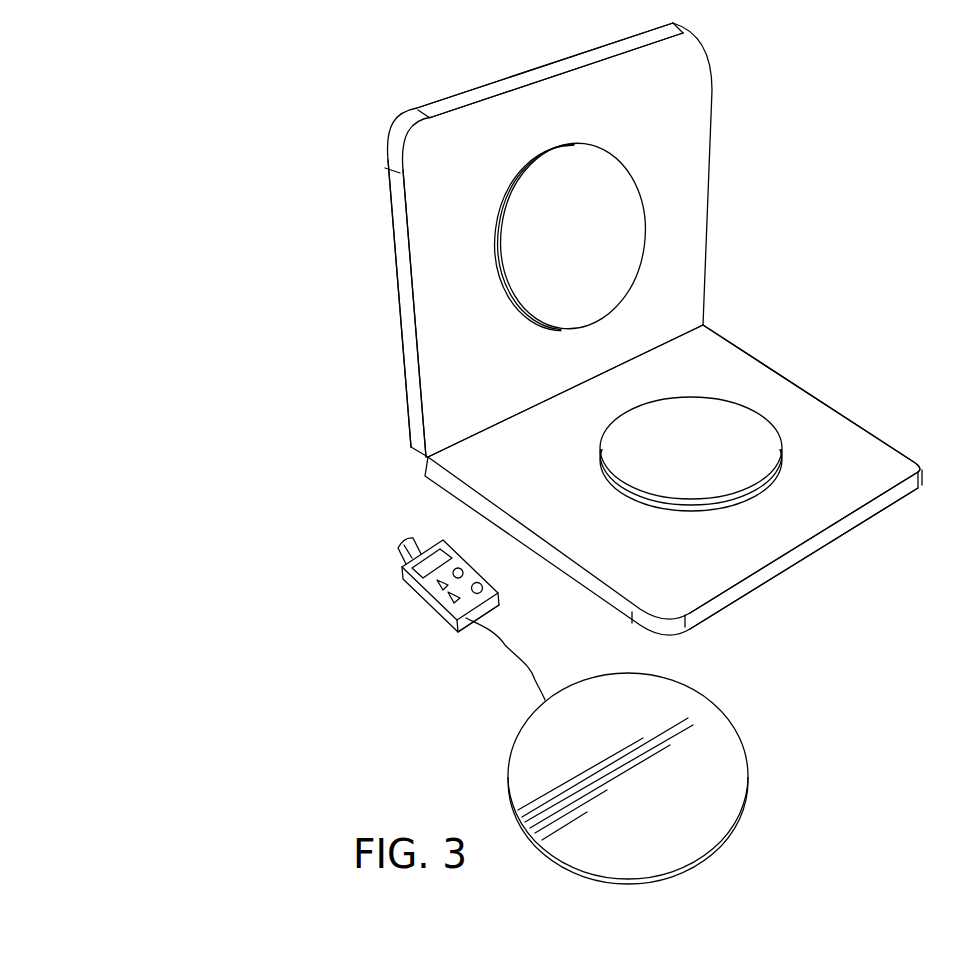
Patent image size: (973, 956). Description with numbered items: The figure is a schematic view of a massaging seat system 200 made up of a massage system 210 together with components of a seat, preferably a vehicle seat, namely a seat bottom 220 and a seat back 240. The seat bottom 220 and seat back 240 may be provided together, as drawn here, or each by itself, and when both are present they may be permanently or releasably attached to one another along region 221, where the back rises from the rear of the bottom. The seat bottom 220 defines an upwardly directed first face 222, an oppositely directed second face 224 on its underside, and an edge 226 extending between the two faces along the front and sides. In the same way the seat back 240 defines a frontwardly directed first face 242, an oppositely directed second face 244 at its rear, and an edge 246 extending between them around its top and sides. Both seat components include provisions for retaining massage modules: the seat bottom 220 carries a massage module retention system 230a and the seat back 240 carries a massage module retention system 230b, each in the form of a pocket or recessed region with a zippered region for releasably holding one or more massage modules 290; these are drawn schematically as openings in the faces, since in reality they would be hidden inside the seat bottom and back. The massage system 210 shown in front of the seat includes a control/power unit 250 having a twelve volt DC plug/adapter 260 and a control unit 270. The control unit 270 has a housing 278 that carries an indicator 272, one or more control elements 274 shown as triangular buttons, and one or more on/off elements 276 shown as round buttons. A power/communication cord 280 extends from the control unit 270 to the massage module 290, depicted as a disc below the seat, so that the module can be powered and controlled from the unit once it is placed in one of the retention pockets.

The massaging seat system 200 is at (178, 146).
The massage system 210 is at (360, 762).
The seat bottom 220 is at (870, 440).
The region 221 is at (473, 435).
The first face 222 is at (892, 465).
The second face 224 is at (870, 482).
The edge 226 is at (788, 560).
The massage module retention system 230a is at (762, 408).
The massage module retention system 230b is at (645, 247).
The seat back 240 is at (427, 245).
The first face 242 is at (427, 188).
The second face 244 is at (430, 155).
The edge 246 is at (525, 72).
The control/power unit 250 is at (323, 535).
The 12 VDC plug/adapter 260 is at (398, 552).
The control unit 270 is at (417, 590).
The indicator 272 is at (447, 540).
The control elements 274 is at (442, 608).
The on/off elements 276 is at (463, 567).
The housing 278 is at (488, 607).
The power/communication cord 280 is at (490, 632).
The massage module 290 is at (712, 702).